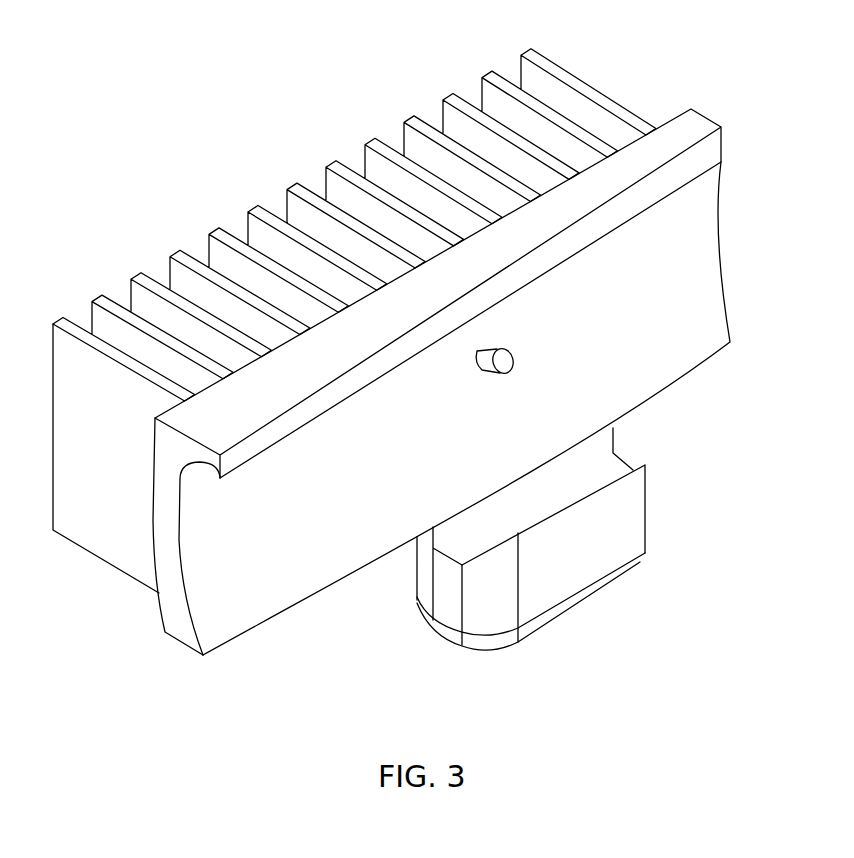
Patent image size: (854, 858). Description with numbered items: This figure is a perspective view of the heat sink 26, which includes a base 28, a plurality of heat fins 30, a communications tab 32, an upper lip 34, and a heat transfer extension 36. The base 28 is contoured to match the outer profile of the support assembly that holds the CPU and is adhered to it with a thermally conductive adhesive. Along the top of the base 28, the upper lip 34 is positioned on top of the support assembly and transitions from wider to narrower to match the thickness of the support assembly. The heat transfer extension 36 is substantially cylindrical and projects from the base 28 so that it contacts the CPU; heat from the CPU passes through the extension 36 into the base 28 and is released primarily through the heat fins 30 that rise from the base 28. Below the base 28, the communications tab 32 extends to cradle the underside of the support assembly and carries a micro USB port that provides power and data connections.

The heat sink 26 is at (652, 87).
The base 28 is at (704, 248).
The heat fins 30 is at (120, 224).
The communications tab 32 is at (652, 500).
The upper lip 34 is at (163, 462).
The heat transfer extension 36 is at (470, 349).